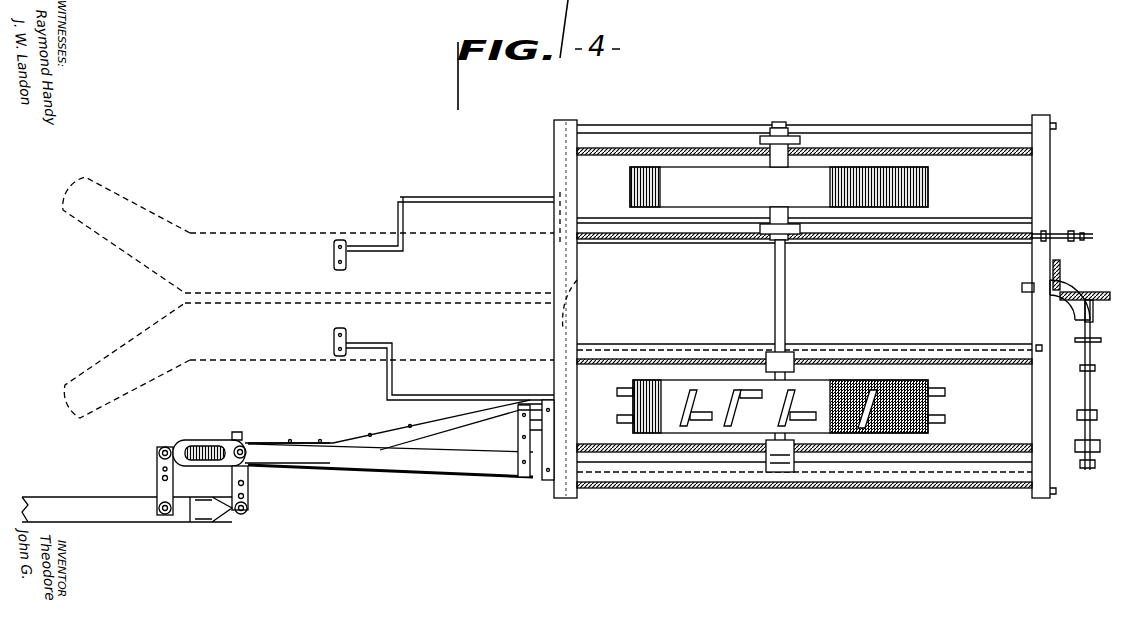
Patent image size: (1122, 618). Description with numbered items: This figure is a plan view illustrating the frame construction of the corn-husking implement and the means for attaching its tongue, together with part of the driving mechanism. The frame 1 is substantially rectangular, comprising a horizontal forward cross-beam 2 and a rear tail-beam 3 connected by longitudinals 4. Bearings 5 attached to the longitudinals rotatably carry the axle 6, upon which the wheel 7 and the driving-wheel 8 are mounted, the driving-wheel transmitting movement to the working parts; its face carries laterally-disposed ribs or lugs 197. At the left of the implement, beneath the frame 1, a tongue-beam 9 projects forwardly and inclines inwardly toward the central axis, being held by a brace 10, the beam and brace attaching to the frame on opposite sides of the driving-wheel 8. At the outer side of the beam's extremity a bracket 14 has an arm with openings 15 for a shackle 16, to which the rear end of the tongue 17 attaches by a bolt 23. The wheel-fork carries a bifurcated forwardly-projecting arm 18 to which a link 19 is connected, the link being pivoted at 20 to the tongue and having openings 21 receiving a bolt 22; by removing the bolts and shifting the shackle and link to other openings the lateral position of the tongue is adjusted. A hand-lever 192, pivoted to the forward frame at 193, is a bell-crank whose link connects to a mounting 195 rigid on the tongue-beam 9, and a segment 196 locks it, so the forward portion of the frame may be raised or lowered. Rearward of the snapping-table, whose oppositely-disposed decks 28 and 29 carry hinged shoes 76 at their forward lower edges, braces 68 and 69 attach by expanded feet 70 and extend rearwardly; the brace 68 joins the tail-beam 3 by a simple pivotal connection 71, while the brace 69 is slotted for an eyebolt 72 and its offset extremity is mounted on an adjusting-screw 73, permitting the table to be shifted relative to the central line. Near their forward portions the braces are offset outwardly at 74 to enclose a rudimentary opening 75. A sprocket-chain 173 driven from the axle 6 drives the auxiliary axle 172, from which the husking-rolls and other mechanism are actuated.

The frame 1 is at (577, 322).
The forward cross-beam 2 is at (554, 160).
The tail-beam 3 is at (1050, 170).
The longitudinals 4 is at (845, 130).
The bearings 5 is at (792, 155).
The axle 6 is at (790, 320).
The wheel 7 is at (690, 180).
The driving-wheel 8 is at (633, 430).
The tongue-beam 9 is at (478, 470).
The brace 10 is at (456, 422).
The bracket 14 is at (248, 478).
The openings 15 is at (248, 497).
The shackle 16 is at (228, 522).
The tongue 17 is at (113, 515).
The bifurcated forwardly-projecting arm 18 is at (186, 440).
The link 19 is at (157, 477).
The pivot 20 is at (165, 514).
The openings 21 is at (160, 468).
The bolt 22 is at (164, 448).
The bolt 23 is at (246, 512).
The deck 28 is at (305, 358).
The deck 29 is at (280, 238).
The brace 68 is at (612, 344).
The brace 69 is at (612, 240).
The expanded feet 70 is at (347, 338).
The pivotal connection 71 is at (1038, 350).
The eyebolt 72 is at (1044, 236).
The adjusting-screw 73 is at (1084, 242).
The offset 74 is at (447, 197).
The rudimentary opening 75 is at (402, 198).
The shoes 76 is at (126, 297).
The auxiliary axle 172 is at (1086, 350).
The sprocket-chain 173 is at (946, 488).
The hand-lever 192 is at (512, 407).
The pivot 193 is at (548, 455).
The mounting 195 is at (522, 435).
The segment 196 is at (698, 430).
The ribs or lugs 197 is at (728, 430).